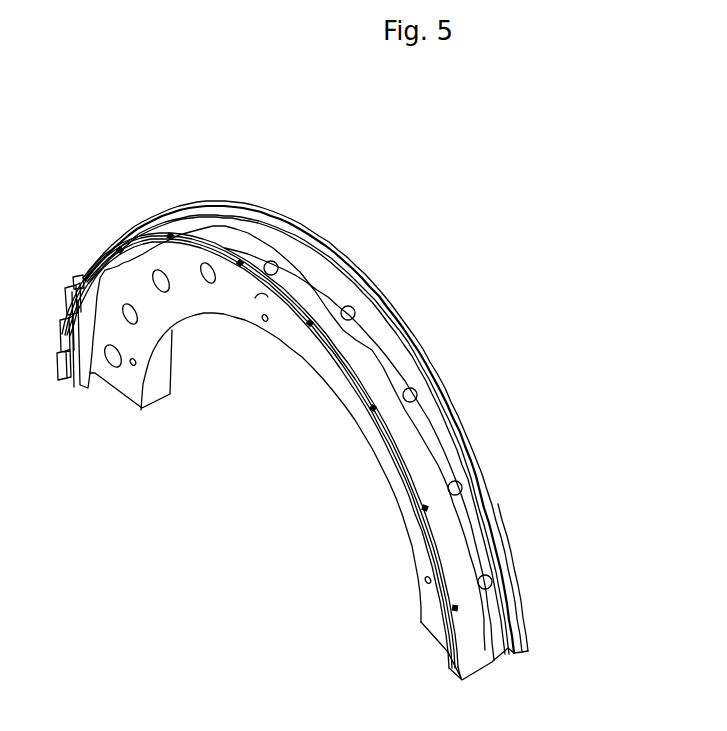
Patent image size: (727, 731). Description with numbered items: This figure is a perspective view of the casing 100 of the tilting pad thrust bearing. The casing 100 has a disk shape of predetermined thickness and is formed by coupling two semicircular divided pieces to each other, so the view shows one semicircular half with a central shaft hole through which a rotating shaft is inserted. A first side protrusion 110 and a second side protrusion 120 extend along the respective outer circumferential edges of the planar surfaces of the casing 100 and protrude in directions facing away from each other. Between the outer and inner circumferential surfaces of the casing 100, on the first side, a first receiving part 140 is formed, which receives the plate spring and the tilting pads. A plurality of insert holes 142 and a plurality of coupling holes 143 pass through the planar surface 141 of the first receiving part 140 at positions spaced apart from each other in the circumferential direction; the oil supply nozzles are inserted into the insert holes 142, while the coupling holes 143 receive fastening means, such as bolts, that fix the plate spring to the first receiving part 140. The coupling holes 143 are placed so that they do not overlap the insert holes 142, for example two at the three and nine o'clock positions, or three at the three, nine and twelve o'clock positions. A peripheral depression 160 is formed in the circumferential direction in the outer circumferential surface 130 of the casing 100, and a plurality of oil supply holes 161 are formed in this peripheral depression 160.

The casing 100 is at (128, 137).
The first side protrusion 110 is at (97, 262).
The second side protrusion 120 is at (247, 208).
The outer circumferential surface 130 is at (183, 233).
The first receiving part 140 is at (340, 397).
The planar surface 141 is at (172, 305).
The insert holes 142 is at (132, 313).
The coupling holes 143 is at (265, 322).
The peripheral depression 160 is at (477, 548).
The oil supply holes 161 is at (487, 583).